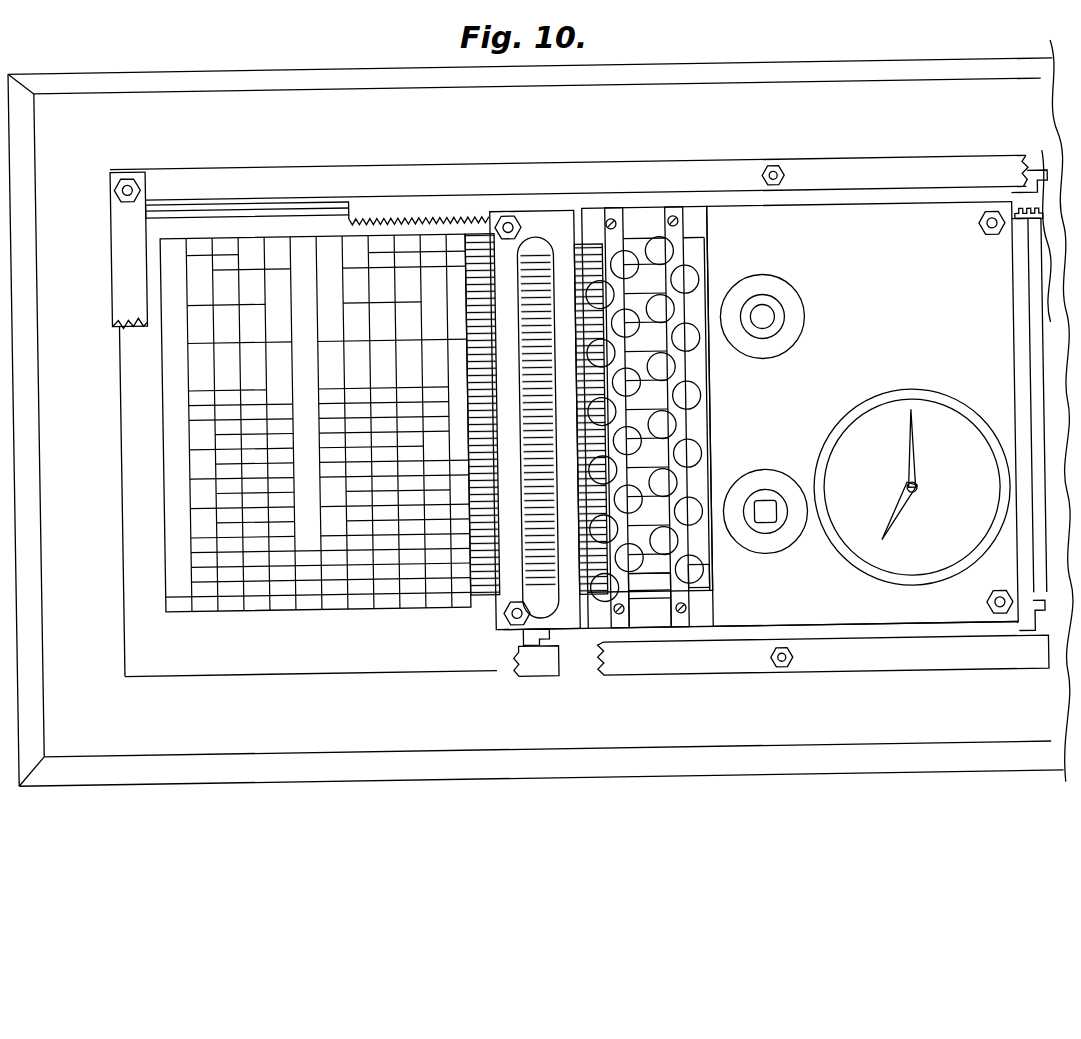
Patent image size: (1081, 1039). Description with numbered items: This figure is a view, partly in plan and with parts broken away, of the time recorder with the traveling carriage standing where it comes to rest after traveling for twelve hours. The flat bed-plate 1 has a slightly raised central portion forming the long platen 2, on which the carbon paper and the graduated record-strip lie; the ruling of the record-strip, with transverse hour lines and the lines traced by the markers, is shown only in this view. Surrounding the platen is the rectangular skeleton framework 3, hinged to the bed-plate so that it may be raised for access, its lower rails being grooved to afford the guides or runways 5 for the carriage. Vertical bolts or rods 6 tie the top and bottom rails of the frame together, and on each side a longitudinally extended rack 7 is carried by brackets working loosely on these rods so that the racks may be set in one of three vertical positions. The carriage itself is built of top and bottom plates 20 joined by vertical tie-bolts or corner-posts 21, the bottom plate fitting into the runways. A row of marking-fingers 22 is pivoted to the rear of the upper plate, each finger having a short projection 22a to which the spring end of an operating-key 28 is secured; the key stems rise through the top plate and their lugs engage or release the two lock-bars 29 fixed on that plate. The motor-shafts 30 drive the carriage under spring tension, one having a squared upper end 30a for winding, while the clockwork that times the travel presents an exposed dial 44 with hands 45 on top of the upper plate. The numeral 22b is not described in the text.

The bed-plate 1 is at (542, 419).
The platen 2 is at (138, 629).
The rectangular skeleton framework 3 is at (644, 172).
The guides or runways 5 is at (279, 201).
The bolts or rods 6 is at (779, 169).
The rack 7 is at (424, 200).
The top and bottom plates 20 is at (877, 413).
The tie-bolts or corner-posts 21 is at (525, 228).
The marking-fingers 22 is at (477, 292).
The short projection 22a is at (594, 271).
The cross piece 22b is at (657, 576).
The operating-key 28 is at (700, 512).
The lock-bar 29 is at (680, 236).
The motor-shafts 30 is at (768, 316).
The squared upper end 30a is at (768, 509).
The dial 44 is at (912, 487).
The hands 45 is at (907, 458).